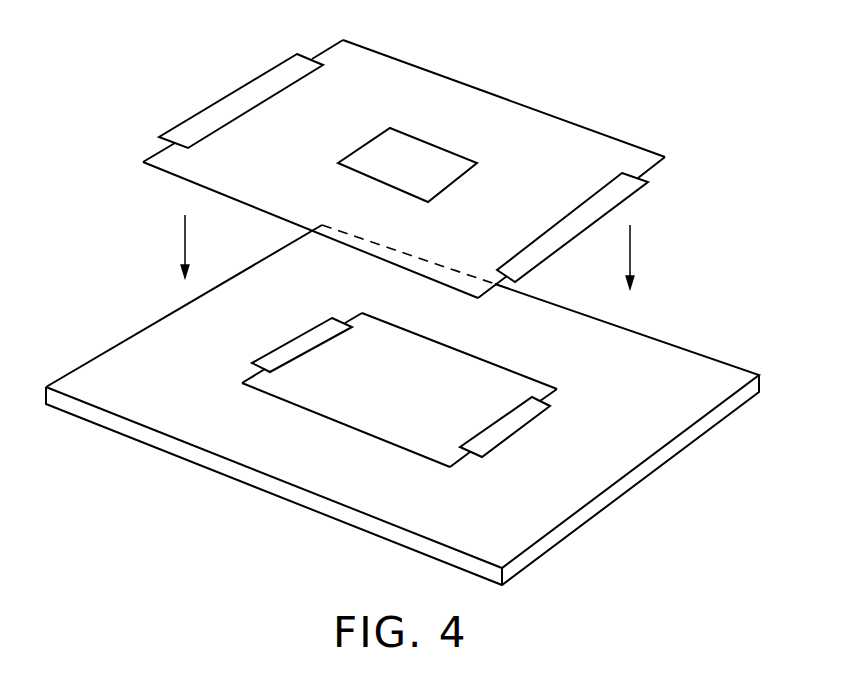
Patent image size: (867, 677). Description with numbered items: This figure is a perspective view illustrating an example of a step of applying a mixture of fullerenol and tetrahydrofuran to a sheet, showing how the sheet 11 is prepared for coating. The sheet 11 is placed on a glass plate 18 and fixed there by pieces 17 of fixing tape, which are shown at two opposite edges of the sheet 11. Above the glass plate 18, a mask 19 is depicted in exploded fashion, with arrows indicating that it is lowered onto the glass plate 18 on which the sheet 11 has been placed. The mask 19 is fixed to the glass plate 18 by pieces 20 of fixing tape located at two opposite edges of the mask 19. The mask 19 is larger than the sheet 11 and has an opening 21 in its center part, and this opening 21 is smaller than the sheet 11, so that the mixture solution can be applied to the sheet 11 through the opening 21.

The sheet 11 is at (515, 370).
The pieces of fixing tape 17 is at (267, 353).
The glass plate 18 is at (343, 523).
The mask 19 is at (450, 78).
The pieces of fixing tape 20 is at (220, 98).
The opening 21 is at (440, 148).